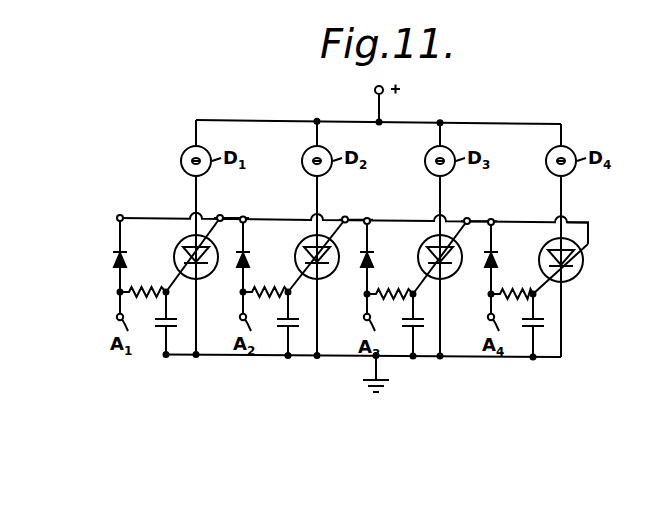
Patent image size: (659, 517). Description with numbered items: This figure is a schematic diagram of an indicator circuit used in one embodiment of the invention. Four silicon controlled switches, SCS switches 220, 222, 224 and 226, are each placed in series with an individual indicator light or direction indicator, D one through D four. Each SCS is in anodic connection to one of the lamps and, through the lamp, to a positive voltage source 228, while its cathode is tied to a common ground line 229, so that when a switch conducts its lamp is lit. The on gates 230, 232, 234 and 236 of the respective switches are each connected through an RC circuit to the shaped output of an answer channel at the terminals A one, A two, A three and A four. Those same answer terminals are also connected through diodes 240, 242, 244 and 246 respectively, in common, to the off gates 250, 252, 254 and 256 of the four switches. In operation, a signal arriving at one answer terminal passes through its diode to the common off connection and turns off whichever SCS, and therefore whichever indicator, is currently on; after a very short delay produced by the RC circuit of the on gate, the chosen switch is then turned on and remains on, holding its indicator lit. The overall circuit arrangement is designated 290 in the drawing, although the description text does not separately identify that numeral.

The positive voltage source 228 is at (255, 120).
The common ground line 229 is at (352, 358).
The SCS switch 220 is at (175, 248).
The SCS switch 222 is at (297, 248).
The SCS switch 224 is at (420, 248).
The SCS switch 226 is at (546, 241).
The on gate 230 is at (170, 278).
The on gate 232 is at (292, 278).
The on gate 234 is at (415, 278).
The on gate 236 is at (535, 279).
The diode 240 is at (115, 271).
The diode 242 is at (238, 271).
The diode 244 is at (362, 271).
The diode 246 is at (486, 271).
The off gate 250 is at (232, 217).
The off gate 252 is at (356, 219).
The off gate 254 is at (478, 221).
The off gate 256 is at (589, 244).
The sequencing circuit 290 is at (623, 253).